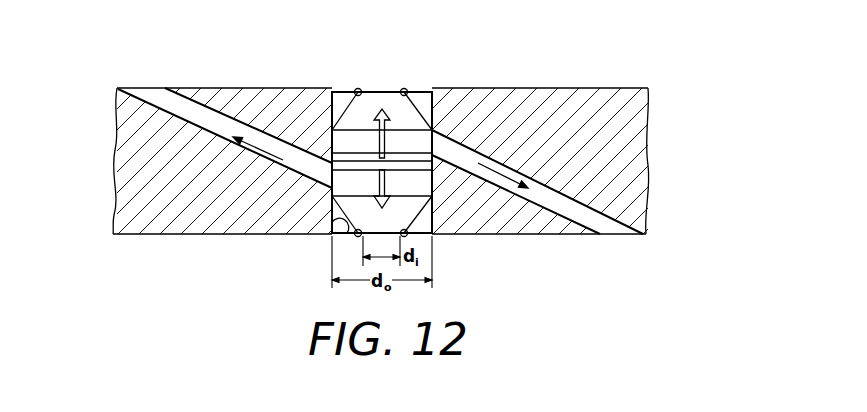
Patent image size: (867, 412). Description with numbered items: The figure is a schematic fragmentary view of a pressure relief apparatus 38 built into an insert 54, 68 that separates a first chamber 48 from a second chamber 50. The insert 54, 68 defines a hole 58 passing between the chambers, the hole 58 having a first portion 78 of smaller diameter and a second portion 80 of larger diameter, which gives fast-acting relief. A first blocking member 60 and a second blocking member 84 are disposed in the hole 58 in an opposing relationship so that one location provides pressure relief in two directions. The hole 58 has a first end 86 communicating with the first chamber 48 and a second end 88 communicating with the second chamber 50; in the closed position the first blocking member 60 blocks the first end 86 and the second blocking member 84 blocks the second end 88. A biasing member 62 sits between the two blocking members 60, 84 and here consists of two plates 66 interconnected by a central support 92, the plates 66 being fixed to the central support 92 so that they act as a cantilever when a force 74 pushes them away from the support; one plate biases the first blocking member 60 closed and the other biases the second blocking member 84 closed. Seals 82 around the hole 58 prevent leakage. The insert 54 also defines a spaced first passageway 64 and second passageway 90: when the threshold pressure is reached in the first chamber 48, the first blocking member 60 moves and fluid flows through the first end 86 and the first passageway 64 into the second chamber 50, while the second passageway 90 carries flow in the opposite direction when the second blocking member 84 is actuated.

The pressure relief apparatus 38 is at (665, 89).
The first chamber 48 is at (598, 79).
The second chamber 50 is at (600, 265).
The insert 54 is at (135, 202).
The insert 68 is at (135, 202).
The first passageway 64 is at (600, 215).
The hole 58 is at (355, 91).
The second portion 80 is at (355, 91).
The first portion 78 is at (383, 90).
The first blocking member 60 is at (405, 120).
The force 74 is at (378, 141).
The seal 82 is at (362, 91).
The first end 86 is at (345, 90).
The second blocking member 84 is at (347, 183).
The second end 88 is at (333, 222).
The biasing member 62 is at (433, 157).
The plates 66 is at (433, 157).
The central support 92 is at (332, 165).
The second passageway 90 is at (182, 120).